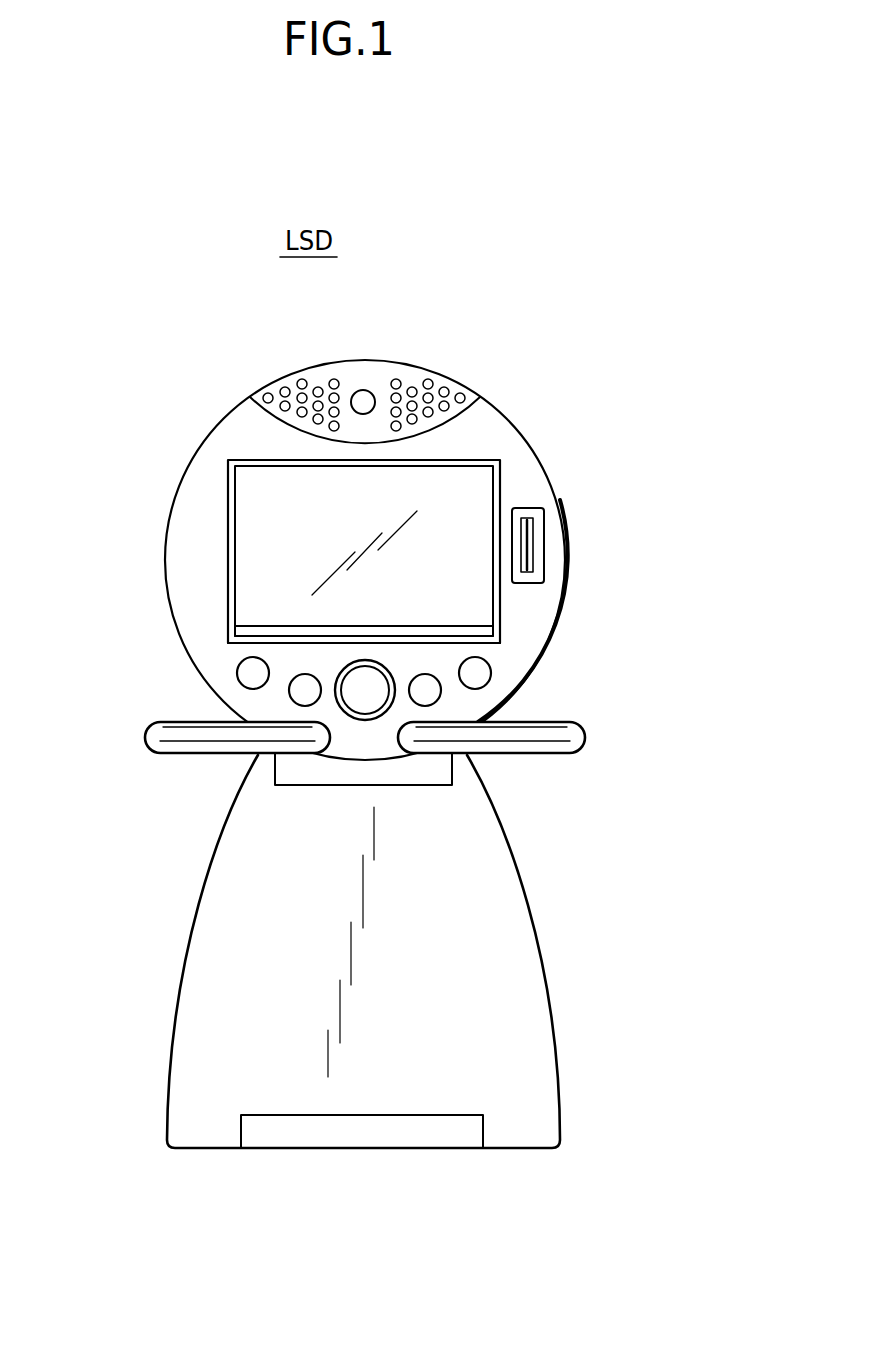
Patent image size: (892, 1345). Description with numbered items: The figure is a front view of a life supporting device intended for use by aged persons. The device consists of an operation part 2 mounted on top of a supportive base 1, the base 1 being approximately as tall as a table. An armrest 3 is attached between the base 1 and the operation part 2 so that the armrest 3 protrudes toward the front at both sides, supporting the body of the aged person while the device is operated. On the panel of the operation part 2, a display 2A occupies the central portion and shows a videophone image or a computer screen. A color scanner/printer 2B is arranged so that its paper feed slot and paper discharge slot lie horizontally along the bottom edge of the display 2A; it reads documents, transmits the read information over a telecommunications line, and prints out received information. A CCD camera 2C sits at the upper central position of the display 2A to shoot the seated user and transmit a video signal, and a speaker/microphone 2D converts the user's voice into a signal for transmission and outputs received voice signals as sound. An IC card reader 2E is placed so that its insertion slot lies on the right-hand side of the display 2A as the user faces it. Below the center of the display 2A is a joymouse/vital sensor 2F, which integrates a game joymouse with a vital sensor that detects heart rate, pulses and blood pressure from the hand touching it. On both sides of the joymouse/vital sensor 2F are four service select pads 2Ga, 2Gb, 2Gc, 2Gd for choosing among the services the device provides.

The supportive base 1 is at (205, 917).
The operation part 2 is at (192, 398).
The display 2A is at (293, 507).
The color scanner/printer 2B is at (230, 633).
The CCD camera 2C is at (358, 400).
The speaker/microphone 2D is at (418, 370).
The IC card reader 2E is at (533, 507).
The joymouse/vital sensor 2F is at (368, 705).
The service select pad 2Ga is at (243, 668).
The service select pad 2Gb is at (293, 697).
The service select pad 2Gc is at (428, 697).
The service select pad 2Gd is at (478, 672).
The armrest 3 is at (152, 730).